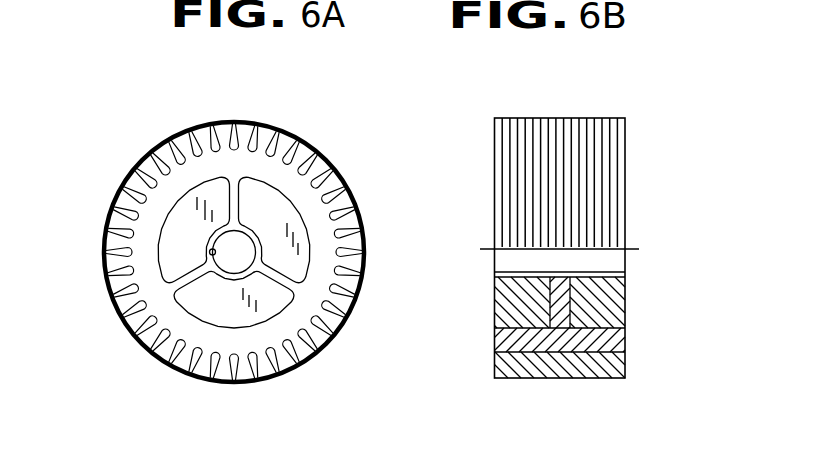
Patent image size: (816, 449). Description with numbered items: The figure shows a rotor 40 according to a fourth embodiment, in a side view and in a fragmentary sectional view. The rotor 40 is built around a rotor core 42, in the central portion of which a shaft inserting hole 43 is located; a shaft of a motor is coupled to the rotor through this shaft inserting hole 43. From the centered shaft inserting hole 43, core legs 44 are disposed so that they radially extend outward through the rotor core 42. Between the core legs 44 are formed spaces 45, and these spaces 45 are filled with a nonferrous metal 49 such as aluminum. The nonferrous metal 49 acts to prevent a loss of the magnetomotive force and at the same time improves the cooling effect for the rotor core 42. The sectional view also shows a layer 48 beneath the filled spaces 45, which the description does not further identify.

In FIG. 6A, the rotor 40 is at (231, 263).
In FIG. 6B, the rotor 40 is at (572, 227).
In FIG. 6A, the rotor core 42 is at (128, 311).
In FIG. 6B, the rotor core 42 is at (616, 193).
In FIG. 6A, the shaft inserting hole 43 is at (213, 265).
In FIG. 6A, the core legs 44 is at (232, 198).
In FIG. 6A, the spaces 45 is at (224, 322).
In FIG. 6B, the spaces 45 is at (506, 320).
In FIG. 6B, the intermediate layer 48 is at (572, 307).
In FIG. 6A, the nonferrous metal 49 is at (182, 227).
In FIG. 6B, the nonferrous metal 49 is at (606, 294).